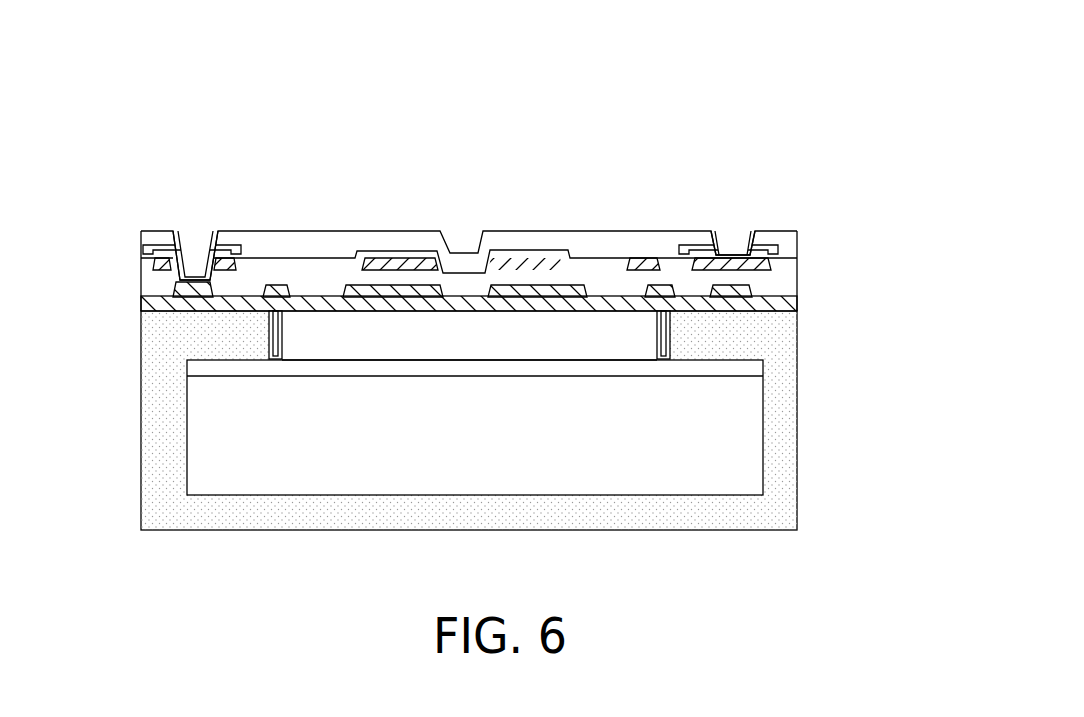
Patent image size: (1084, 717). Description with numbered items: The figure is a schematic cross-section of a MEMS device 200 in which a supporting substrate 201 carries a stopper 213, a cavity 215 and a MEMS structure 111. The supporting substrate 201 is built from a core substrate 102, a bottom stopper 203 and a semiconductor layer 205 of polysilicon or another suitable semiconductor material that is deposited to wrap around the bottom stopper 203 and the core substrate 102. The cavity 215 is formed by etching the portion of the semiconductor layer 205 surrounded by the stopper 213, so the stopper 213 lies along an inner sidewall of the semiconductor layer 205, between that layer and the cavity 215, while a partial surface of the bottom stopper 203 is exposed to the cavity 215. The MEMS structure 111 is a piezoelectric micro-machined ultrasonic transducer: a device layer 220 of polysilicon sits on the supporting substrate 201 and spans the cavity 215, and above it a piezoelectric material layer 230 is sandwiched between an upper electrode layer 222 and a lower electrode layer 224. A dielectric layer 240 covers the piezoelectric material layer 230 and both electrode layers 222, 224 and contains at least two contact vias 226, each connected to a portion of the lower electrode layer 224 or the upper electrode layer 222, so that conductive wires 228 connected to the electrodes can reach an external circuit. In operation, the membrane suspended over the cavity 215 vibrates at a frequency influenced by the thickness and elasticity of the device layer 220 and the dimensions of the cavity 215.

The MEMS device 200 is at (602, 110).
The MEMS structure 111 is at (875, 268).
The dielectric layer 240 is at (785, 240).
The piezoelectric material layer 230 is at (778, 280).
The device layer 220 is at (764, 305).
The contact vias 226 is at (192, 237).
The conductive wires 228 is at (160, 244).
The upper electrode layer 222 is at (401, 262).
The lower electrode layer 224 is at (523, 290).
The stopper 213 is at (262, 331).
The bottom stopper 203 is at (197, 367).
The semiconductor layer 205 is at (163, 468).
The core substrate 102 is at (494, 465).
The supporting substrate 201 is at (822, 412).
The cavity 215 is at (357, 338).